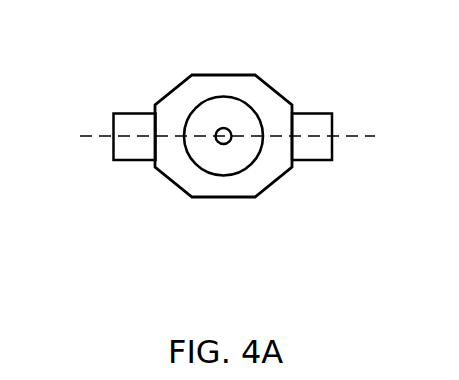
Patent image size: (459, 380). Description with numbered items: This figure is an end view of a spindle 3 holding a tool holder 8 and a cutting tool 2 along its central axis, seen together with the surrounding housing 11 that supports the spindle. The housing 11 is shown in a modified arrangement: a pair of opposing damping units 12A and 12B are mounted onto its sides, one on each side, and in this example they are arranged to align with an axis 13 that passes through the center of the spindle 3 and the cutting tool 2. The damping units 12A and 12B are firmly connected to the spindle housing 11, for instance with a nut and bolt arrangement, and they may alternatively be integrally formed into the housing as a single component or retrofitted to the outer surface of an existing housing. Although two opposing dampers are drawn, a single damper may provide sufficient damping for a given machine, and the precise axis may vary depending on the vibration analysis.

The housing 11 is at (270, 103).
The damping unit 12A is at (128, 143).
The damping unit 12B is at (317, 145).
The axis 13 is at (363, 133).
The spindle 3 is at (215, 160).
The cutting tool 2 is at (250, 193).
The tool holder 8 is at (226, 144).